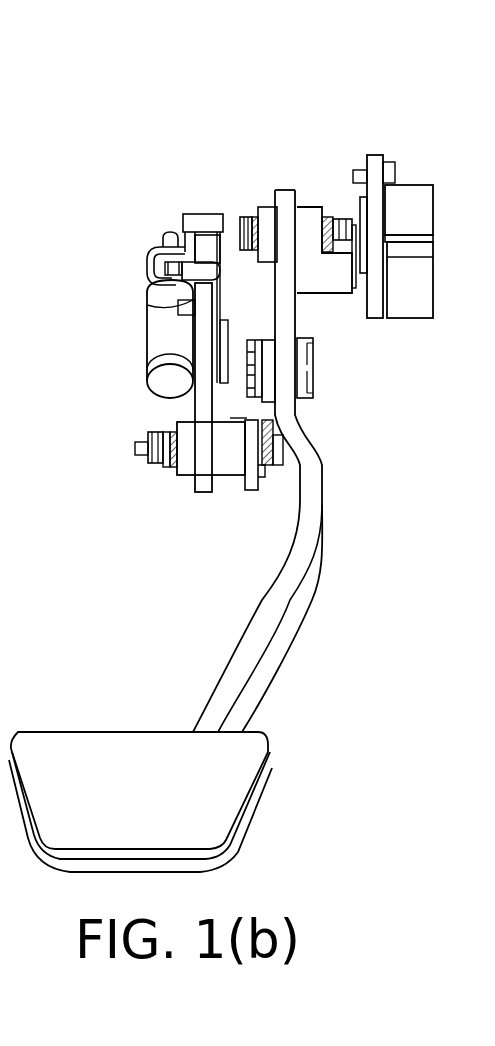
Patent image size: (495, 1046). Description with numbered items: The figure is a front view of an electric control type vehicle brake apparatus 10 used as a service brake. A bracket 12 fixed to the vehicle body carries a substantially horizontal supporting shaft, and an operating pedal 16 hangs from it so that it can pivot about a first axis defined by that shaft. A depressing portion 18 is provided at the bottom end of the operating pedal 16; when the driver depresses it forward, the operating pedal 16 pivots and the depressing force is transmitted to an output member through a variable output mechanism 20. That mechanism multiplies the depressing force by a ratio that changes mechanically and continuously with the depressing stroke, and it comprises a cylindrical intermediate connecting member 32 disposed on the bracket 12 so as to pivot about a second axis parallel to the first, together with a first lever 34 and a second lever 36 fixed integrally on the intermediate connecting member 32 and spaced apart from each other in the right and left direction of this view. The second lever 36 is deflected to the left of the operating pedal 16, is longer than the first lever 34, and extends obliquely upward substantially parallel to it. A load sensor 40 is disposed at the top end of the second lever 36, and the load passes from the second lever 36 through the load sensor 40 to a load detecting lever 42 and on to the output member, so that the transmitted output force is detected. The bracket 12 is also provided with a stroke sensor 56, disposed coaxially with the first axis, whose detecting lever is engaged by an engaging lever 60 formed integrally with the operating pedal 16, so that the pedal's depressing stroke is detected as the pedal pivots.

The electric control type vehicle brake apparatus 10 is at (412, 124).
The bracket 12 is at (252, 208).
The operating pedal 16 is at (305, 598).
The depressing portion 18 is at (95, 750).
The variable output mechanism 20 is at (210, 524).
The intermediate connecting member 32 is at (230, 462).
The first lever 34 is at (255, 412).
The second lever 36 is at (205, 407).
The load sensor 40 is at (162, 362).
The load detecting lever 42 is at (200, 218).
The stroke sensor 56 is at (418, 212).
The engaging lever 60 is at (330, 282).